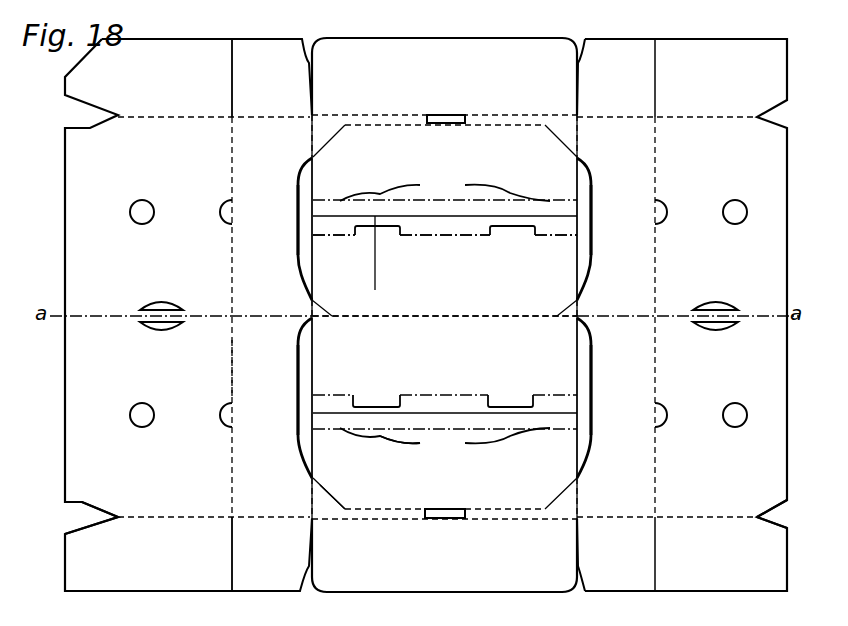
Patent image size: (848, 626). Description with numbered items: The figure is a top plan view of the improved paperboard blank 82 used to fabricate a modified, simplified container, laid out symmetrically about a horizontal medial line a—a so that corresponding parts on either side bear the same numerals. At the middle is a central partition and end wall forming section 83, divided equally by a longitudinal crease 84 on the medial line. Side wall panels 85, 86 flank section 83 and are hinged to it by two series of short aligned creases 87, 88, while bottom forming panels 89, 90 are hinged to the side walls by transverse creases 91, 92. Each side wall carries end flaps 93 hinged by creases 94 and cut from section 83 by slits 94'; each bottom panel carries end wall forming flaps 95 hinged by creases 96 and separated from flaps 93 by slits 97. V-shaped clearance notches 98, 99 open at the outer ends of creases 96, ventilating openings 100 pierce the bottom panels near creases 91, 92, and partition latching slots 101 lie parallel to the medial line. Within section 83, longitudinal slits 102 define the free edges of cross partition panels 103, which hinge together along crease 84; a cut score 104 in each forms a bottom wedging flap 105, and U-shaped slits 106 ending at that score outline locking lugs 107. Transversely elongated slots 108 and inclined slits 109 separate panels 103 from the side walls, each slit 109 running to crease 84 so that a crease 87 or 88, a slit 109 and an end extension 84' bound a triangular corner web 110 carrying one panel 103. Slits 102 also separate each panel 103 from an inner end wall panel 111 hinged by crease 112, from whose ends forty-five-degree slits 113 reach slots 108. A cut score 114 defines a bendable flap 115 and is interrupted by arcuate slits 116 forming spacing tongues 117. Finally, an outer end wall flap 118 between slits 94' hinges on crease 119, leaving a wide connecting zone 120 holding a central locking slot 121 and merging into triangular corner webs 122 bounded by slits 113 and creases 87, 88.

The blank 82 is at (61, 481).
The central partition and end wall forming section 83 is at (400, 590).
The longitudinally extending crease 84 is at (445, 331).
The end extension of hinge crease 84' is at (451, 291).
The side wall panel 85 is at (243, 338).
The side wall panel 86 is at (650, 188).
The short creases 87 is at (310, 136).
The short creases 88 is at (583, 141).
The bottom forming panel 89 is at (137, 520).
The bottom forming panel 90 is at (732, 515).
The transversely extending crease 91 is at (230, 372).
The transversely extending crease 92 is at (657, 355).
The end flap 93 is at (242, 60).
The crease 94 is at (437, 301).
The slit 94' is at (436, 315).
The end wall forming flap 95 is at (147, 105).
The crease 96 is at (197, 120).
The slit 97 is at (658, 91).
The V-shaped clearance notch 98 is at (95, 507).
The V-shaped clearance notch 99 is at (775, 520).
The ventilating opening 100 is at (142, 224).
The partition latching slot 101 is at (148, 320).
The longitudinally extending slit 102 is at (445, 219).
The cross partition panel 103 is at (475, 328).
The cut score 104 is at (455, 395).
The bottom wedging flap 105 is at (476, 236).
The U-shaped slit 106 is at (380, 237).
The partition locking lug 107 is at (508, 238).
The transversely elongated slot 108 is at (300, 204).
The inclined slit 109 is at (328, 300).
The triangular corner web 110 is at (318, 298).
The inner end wall panel 111 is at (480, 135).
The longitudinally extending crease 112 is at (363, 508).
The inclined slit 113 is at (343, 317).
The cut score 114 is at (333, 200).
The bendable flap 115 is at (546, 201).
The arcuate slit 116 is at (375, 438).
The end wall panel spacing tongue 117 is at (348, 446).
The outer end wall flap 118 is at (516, 45).
The crease 119 is at (335, 115).
The connecting zone 120 is at (388, 115).
The locking slot 121 is at (441, 123).
The triangular corner web 122 is at (552, 128).